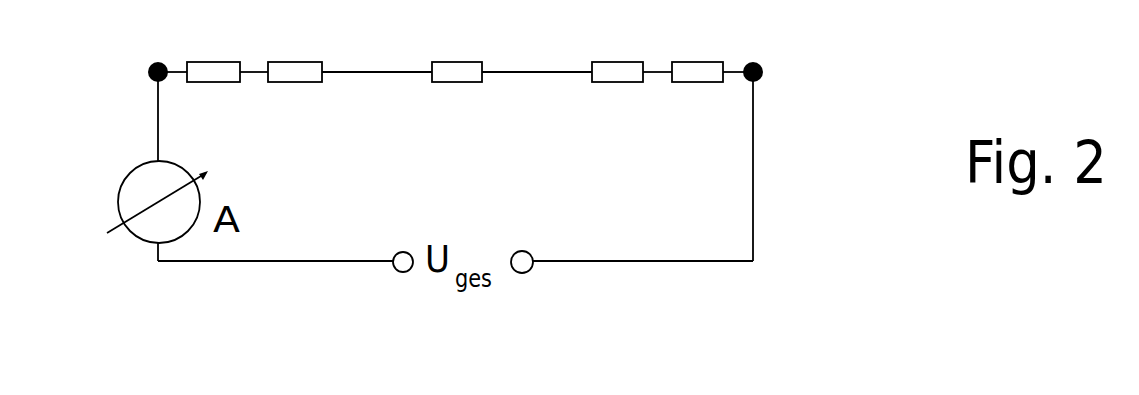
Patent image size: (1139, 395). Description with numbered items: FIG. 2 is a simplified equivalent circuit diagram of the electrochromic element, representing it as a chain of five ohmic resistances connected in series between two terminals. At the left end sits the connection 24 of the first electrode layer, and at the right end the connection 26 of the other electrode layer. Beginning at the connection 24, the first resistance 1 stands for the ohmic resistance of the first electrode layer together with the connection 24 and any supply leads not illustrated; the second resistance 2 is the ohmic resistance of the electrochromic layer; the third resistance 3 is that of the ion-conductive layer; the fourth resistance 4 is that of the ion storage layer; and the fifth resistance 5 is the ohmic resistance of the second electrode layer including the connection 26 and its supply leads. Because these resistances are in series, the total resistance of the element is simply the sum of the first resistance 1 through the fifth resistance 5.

The connection 24 is at (148, 72).
The connection 26 is at (763, 72).
The resistance R1 1 is at (214, 105).
The resistance R2 2 is at (295, 105).
The resistance R3 3 is at (457, 105).
The resistance R4 4 is at (617, 105).
The resistance R5 5 is at (697, 105).